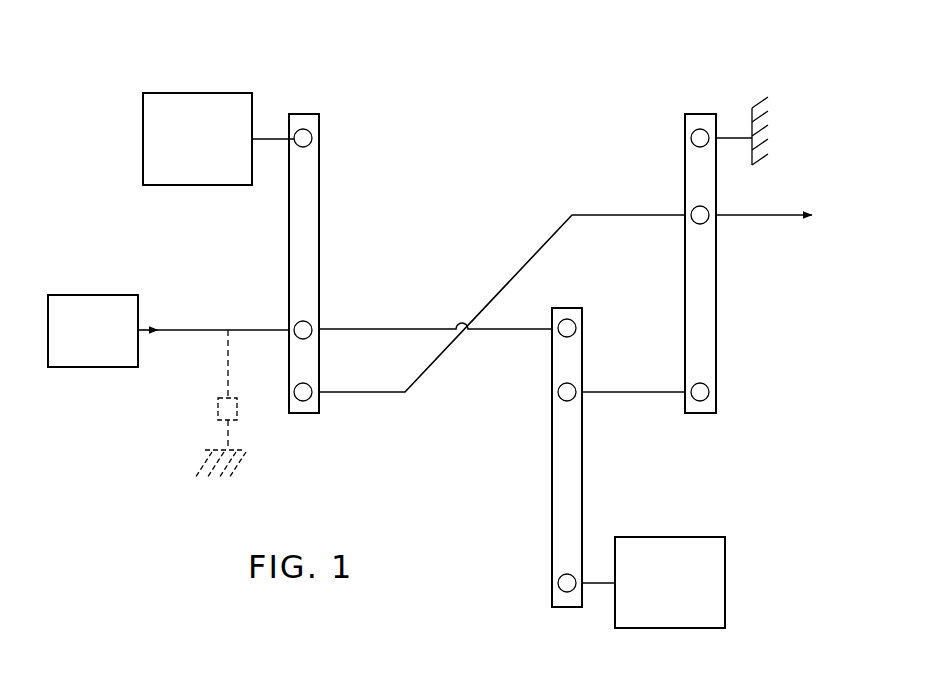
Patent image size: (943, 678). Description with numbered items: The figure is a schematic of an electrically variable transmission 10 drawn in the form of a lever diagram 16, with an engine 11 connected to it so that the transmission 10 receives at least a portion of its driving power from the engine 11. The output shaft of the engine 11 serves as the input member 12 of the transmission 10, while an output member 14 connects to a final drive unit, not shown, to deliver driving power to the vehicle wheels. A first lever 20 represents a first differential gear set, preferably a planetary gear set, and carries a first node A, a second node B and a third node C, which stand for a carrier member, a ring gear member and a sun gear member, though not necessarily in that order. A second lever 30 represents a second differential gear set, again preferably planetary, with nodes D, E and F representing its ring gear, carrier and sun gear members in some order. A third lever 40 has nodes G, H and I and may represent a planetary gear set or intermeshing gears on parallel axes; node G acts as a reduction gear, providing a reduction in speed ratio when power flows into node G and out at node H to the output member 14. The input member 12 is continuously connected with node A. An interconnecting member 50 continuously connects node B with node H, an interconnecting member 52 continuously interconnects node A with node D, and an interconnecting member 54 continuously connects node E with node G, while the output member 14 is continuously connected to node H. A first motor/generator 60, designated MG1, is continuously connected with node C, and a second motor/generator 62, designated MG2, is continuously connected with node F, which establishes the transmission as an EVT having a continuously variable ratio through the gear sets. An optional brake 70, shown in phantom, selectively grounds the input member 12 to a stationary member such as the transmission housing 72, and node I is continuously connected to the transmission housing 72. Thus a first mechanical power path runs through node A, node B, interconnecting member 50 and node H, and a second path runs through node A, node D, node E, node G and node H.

The electrically variable transmission 10 is at (489, 74).
The engine 11 is at (95, 368).
The input member 12 is at (185, 329).
The output member 14 is at (782, 213).
The lever diagram 16 is at (532, 108).
The first lever 20 is at (328, 295).
The second lever 30 is at (563, 492).
The third lever 40 is at (706, 280).
The interconnecting member 50 is at (443, 352).
The interconnecting member 52 is at (404, 328).
The interconnecting member 54 is at (631, 391).
The first motor/generator 60 is at (188, 186).
The second motor/generator 62 is at (725, 581).
The brake 70 is at (246, 403).
The transmission housing 72 is at (226, 478).
The first node A is at (309, 323).
The second node B is at (309, 399).
The third node C is at (309, 145).
The first node D is at (559, 336).
The second node E is at (559, 400).
The third node F is at (552, 583).
The first node G is at (710, 392).
The second node H is at (694, 208).
The third node I is at (694, 131).